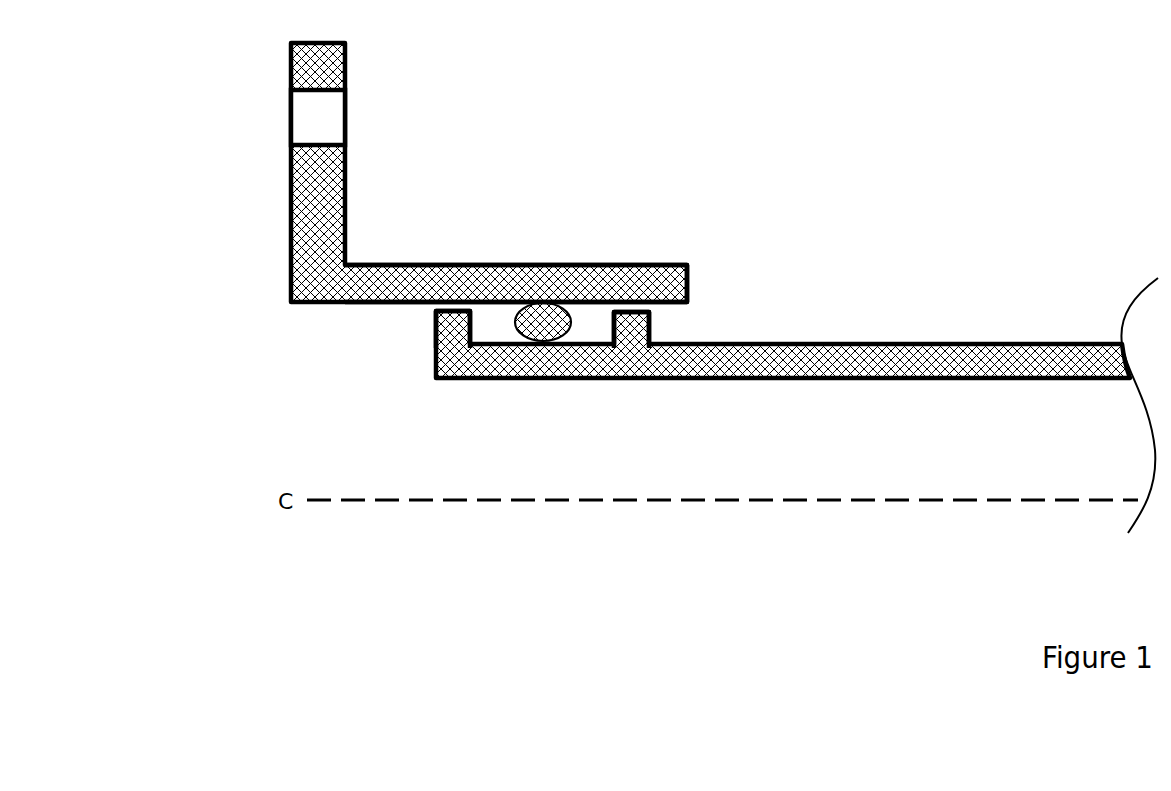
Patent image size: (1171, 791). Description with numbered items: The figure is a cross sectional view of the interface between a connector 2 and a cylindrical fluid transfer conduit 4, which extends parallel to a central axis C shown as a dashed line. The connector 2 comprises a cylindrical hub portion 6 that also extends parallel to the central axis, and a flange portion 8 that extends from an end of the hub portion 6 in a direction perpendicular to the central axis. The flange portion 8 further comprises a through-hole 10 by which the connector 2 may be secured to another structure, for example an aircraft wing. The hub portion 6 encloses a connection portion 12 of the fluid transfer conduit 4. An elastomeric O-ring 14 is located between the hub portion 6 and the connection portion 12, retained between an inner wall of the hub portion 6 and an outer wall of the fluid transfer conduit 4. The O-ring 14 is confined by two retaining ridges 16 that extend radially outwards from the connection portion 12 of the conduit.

The connector 2 is at (442, 207).
The fluid transfer conduit 4 is at (833, 352).
The hub portion 6 is at (600, 277).
The flange portion 8 is at (322, 180).
The through-hole 10 is at (322, 117).
The connection portion 12 is at (436, 398).
The O-ring 14 is at (533, 305).
The retaining ridges 16 is at (630, 332).